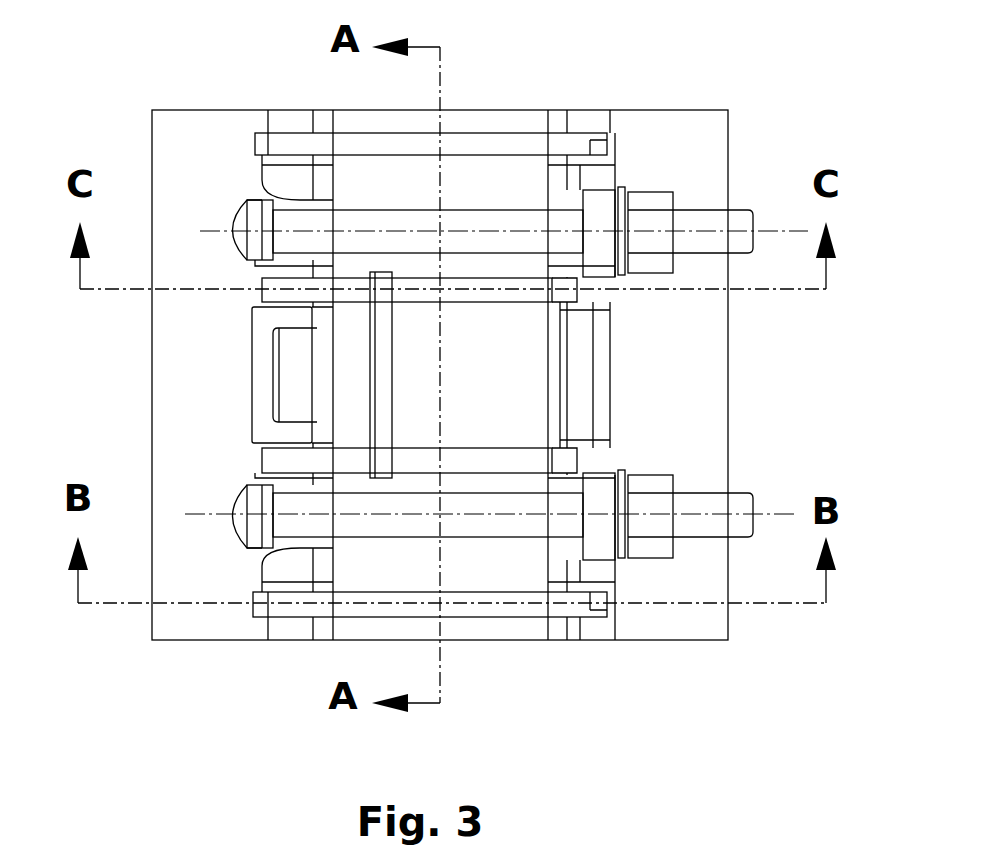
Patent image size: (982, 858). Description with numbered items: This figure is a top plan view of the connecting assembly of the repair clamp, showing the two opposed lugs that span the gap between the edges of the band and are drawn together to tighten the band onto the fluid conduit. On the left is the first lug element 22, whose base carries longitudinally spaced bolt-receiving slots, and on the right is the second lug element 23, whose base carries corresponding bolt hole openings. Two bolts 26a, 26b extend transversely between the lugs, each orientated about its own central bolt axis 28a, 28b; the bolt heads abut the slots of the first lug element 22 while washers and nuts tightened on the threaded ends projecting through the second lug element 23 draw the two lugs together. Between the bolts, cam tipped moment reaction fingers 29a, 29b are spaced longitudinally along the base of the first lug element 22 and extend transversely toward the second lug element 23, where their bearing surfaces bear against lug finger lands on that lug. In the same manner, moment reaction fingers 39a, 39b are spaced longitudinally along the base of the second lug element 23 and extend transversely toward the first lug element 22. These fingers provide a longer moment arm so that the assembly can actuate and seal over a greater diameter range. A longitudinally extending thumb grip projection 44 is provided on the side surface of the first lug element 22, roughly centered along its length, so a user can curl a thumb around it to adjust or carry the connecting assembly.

The first lug element 22 is at (277, 650).
The second lug element 23 is at (602, 642).
The bolt 26a is at (569, 487).
The bolt 26b is at (569, 166).
The central bolt axis 28a is at (718, 517).
The central bolt axis 28b is at (732, 232).
The lug finger 29a is at (522, 622).
The lug finger 29b is at (514, 140).
The moment reaction finger 39a is at (420, 445).
The moment reaction finger 39b is at (450, 305).
The thumb grip projection 44 is at (250, 372).